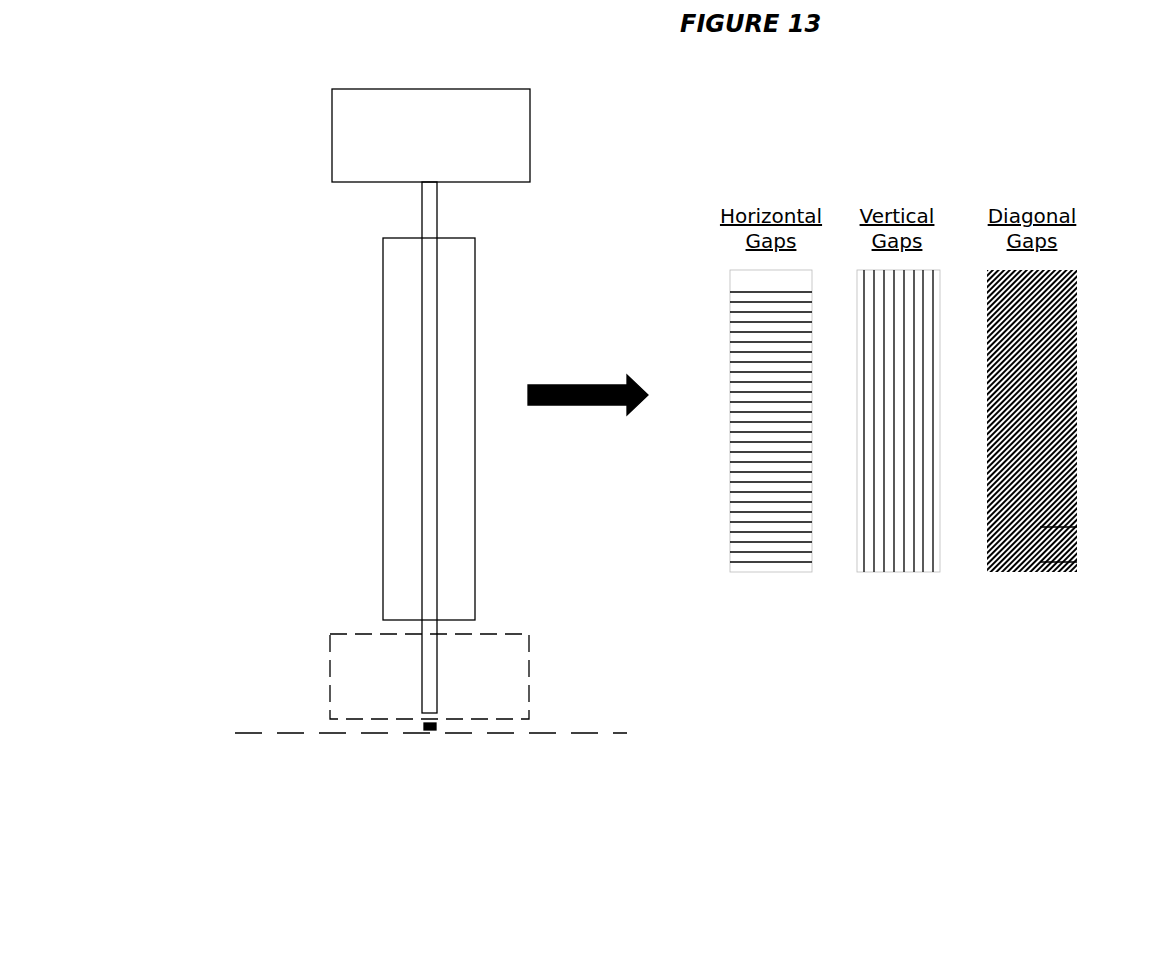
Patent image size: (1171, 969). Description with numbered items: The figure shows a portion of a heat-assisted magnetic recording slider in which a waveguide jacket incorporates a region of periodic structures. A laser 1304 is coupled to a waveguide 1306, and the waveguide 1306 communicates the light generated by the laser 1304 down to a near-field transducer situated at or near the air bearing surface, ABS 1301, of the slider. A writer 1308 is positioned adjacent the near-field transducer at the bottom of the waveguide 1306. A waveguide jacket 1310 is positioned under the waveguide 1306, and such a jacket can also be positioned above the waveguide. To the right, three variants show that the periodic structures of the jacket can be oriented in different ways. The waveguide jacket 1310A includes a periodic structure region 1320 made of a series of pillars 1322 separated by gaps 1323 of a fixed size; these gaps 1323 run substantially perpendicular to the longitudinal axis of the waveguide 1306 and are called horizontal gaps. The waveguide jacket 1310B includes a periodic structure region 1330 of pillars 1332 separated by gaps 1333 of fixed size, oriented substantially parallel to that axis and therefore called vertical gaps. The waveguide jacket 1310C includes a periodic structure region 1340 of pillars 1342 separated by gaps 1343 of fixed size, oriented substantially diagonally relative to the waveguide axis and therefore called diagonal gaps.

The ABS 1301 is at (290, 733).
The laser 1304 is at (530, 140).
The waveguide 1306 is at (437, 214).
The writer 1308 is at (330, 667).
The waveguide jacket 1310 is at (383, 357).
The waveguide jacket 1310A is at (766, 454).
The waveguide jacket 1310B is at (904, 454).
The waveguide jacket 1310C is at (1048, 454).
The periodic structure region 1320 is at (716, 404).
The pillars 1322 is at (750, 562).
The gaps 1323 is at (730, 560).
The periodic structure region 1330 is at (849, 404).
The pillars 1332 is at (928, 505).
The gaps 1333 is at (925, 552).
The periodic structure region 1340 is at (977, 404).
The pillars 1342 is at (1060, 527).
The gaps 1343 is at (1070, 562).